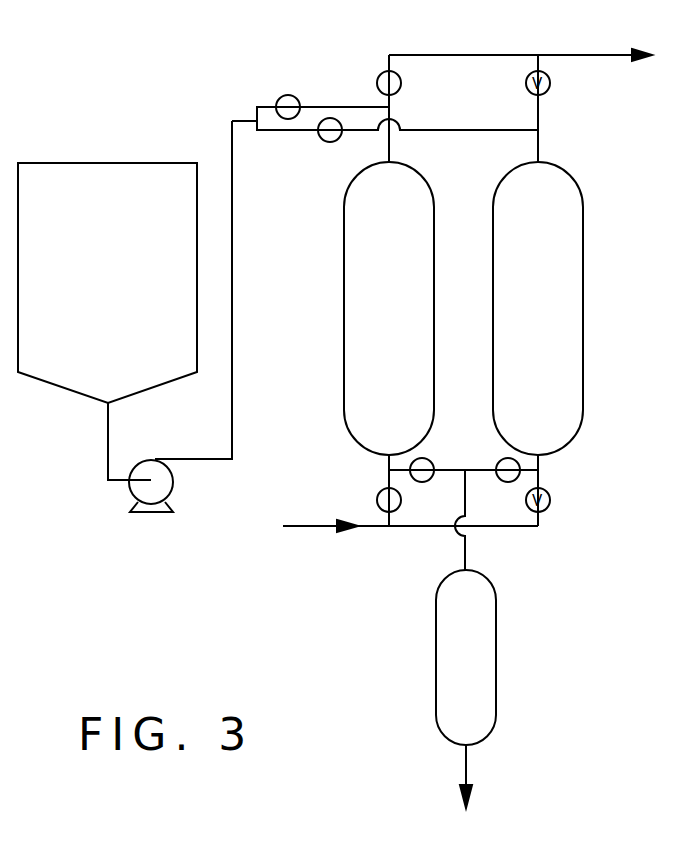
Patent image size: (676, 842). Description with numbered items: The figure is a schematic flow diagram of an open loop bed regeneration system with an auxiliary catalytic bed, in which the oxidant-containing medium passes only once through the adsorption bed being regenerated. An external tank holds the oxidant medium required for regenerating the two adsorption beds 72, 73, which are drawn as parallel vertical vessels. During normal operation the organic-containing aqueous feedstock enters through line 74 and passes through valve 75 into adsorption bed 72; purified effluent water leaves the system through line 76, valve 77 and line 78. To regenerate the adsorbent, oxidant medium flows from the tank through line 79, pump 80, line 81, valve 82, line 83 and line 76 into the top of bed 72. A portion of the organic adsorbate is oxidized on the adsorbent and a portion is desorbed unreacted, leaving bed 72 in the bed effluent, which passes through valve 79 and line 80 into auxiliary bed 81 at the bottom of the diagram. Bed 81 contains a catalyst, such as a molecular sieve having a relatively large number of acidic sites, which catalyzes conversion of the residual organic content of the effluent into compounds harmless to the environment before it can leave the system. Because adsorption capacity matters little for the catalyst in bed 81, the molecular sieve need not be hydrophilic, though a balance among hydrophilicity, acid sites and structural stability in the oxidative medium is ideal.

The adsorption bed 72 is at (344, 330).
The adsorption bed 73 is at (584, 330).
The line 74 is at (383, 530).
The valve 75 is at (378, 506).
The line 76 is at (392, 150).
The valve 77 is at (402, 84).
The line 78 is at (582, 55).
The line / valve 79 is at (108, 442).
The pump / line 80 is at (142, 462).
The line / auxiliary bed 81 is at (233, 254).
The valve 82 is at (284, 96).
The line 83 is at (350, 107).